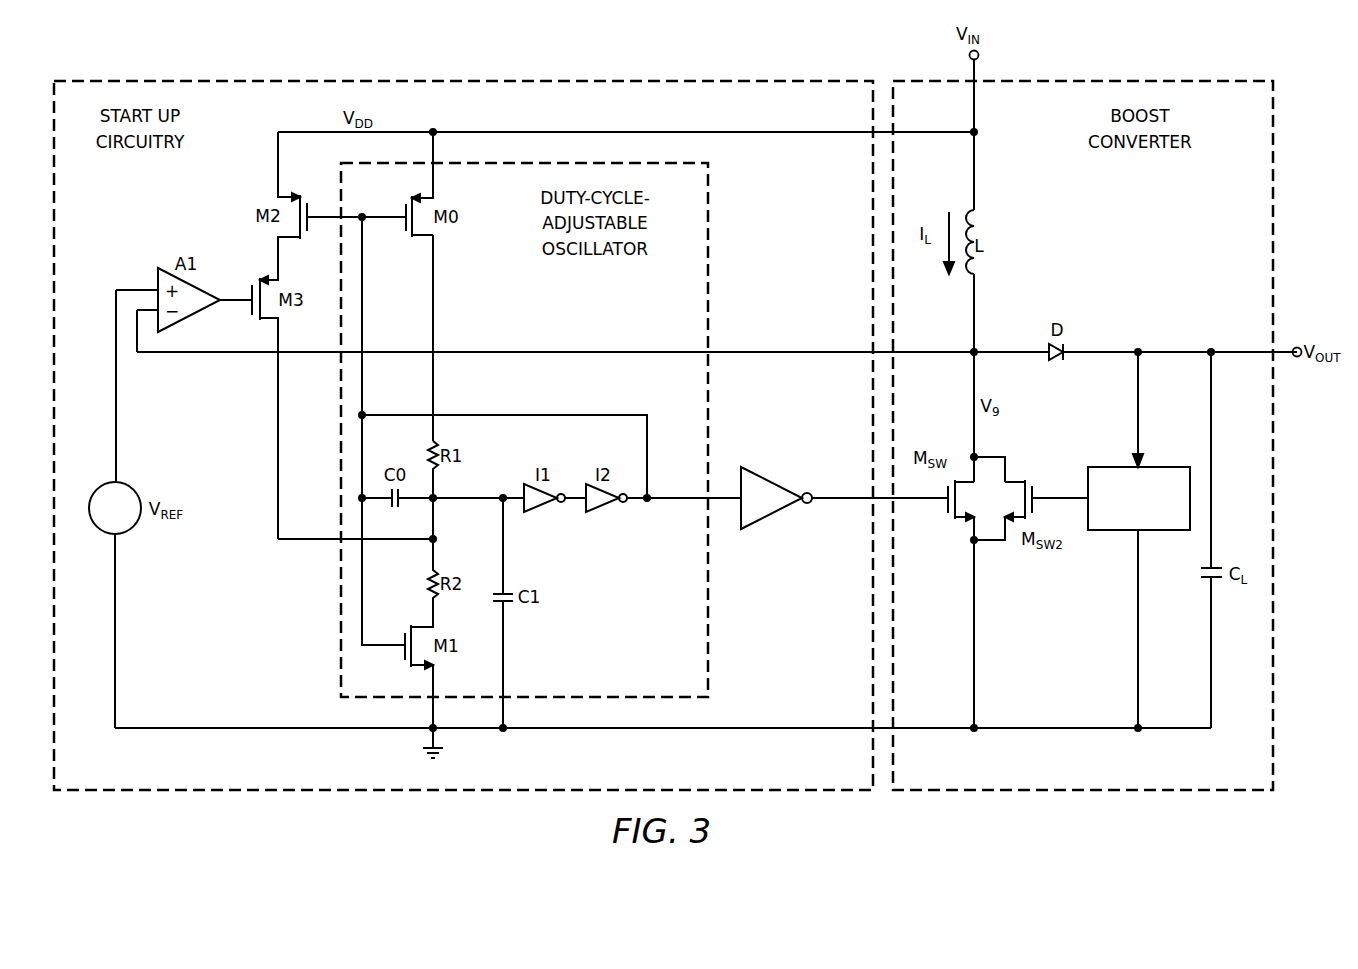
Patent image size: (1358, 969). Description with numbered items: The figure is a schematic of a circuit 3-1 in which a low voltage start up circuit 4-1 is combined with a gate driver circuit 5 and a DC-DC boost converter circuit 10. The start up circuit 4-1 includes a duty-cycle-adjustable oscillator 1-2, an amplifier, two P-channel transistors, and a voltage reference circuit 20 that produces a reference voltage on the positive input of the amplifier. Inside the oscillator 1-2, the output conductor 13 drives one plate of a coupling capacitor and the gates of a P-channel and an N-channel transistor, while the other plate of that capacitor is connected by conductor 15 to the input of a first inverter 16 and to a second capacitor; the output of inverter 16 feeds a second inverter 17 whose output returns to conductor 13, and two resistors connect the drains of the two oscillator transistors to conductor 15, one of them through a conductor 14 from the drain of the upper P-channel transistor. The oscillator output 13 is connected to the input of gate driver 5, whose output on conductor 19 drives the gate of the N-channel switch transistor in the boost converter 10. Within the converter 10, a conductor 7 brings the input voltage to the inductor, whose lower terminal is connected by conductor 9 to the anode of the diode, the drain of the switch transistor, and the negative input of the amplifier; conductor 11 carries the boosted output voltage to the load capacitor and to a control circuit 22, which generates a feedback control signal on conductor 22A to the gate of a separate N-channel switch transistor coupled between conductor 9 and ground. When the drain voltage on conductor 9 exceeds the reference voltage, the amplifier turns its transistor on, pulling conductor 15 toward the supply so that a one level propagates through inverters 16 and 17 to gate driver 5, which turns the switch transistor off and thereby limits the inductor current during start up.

The circuit 3-1 is at (272, 818).
The start up circuit 4-1 is at (424, 80).
The DC-DC boost converter circuit 10 is at (1152, 80).
The oscillator 1-2 is at (338, 598).
The voltage reference circuit 20 is at (100, 481).
The conductor from VIN to inductor L 7 is at (975, 172).
The conductor 9 is at (198, 353).
The conductor 11 is at (1178, 350).
The output of oscillator 13 is at (395, 414).
The conductor from drain of M0 14 is at (434, 292).
The conductor 15 is at (278, 437).
The inverter 16 is at (540, 507).
The inverter 17 is at (601, 507).
The gate driver circuit 5 is at (770, 513).
The gate driver output conductor 19 is at (838, 500).
The control circuit 22 is at (1165, 466).
The conductor 22A is at (1068, 496).